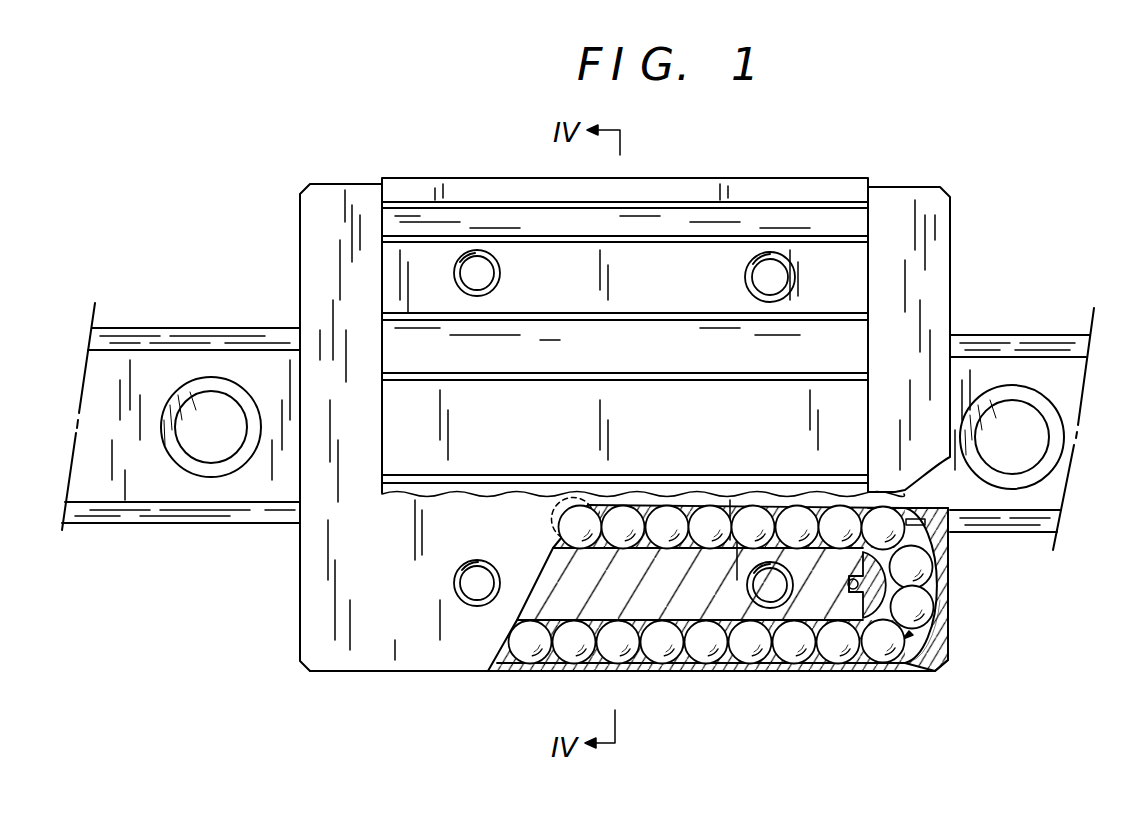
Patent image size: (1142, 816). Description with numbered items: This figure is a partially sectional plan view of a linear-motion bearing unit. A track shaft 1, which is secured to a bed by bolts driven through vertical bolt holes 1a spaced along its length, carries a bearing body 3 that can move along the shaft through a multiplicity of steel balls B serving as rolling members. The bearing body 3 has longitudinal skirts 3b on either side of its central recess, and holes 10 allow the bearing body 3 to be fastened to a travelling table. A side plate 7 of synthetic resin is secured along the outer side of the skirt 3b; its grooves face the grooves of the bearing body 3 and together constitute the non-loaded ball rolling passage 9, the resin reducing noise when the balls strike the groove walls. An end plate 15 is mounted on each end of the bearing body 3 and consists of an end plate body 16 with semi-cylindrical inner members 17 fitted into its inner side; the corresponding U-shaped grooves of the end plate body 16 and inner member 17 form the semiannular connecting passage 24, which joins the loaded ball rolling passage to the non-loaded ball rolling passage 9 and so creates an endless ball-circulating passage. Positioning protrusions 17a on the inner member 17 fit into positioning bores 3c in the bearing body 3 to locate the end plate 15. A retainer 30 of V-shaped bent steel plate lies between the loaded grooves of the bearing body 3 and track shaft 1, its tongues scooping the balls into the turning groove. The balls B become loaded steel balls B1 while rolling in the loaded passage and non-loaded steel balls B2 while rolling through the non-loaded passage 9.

The track shaft 1 is at (1060, 378).
The bolt hole 1a is at (210, 455).
The bearing body 3 is at (777, 178).
The skirt 3b is at (512, 672).
The positioning bore 3c is at (848, 593).
The side plate 7 is at (817, 673).
The non-loaded ball rolling passage 9 is at (552, 672).
The hole 10 is at (490, 283).
The end plate 15 is at (305, 258).
The end plate body 16 is at (925, 672).
The inner member 17 is at (935, 573).
The positioning protrusion 17a is at (851, 579).
The connecting passage 24 is at (927, 627).
The retainer 30 is at (933, 533).
The steel ball B is at (721, 631).
The loaded steel ball B1 is at (717, 537).
The non-loaded steel ball B2 is at (790, 655).